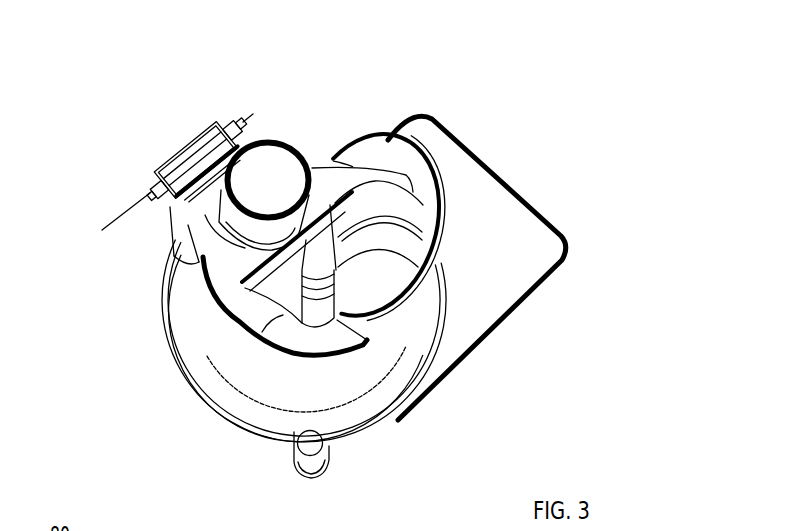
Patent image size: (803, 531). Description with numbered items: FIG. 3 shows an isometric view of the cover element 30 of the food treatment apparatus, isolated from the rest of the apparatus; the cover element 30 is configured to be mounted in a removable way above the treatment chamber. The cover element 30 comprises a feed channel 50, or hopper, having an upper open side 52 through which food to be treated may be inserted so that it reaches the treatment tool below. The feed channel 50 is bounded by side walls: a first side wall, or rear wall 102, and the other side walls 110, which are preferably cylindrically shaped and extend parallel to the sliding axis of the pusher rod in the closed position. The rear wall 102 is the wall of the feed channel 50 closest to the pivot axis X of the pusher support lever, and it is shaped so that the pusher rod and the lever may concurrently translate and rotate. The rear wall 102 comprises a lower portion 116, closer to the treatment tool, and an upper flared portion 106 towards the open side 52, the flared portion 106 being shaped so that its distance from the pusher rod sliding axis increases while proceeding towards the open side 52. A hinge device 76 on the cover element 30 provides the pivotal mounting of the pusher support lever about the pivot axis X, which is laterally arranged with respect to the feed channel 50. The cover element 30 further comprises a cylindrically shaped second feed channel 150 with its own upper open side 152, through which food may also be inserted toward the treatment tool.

The cover element 30 is at (563, 128).
The feed channel 50 is at (484, 269).
The upper open side 52 is at (402, 210).
The hinge device 76 is at (150, 185).
The pivot axis X is at (118, 216).
The rear wall 102 is at (258, 272).
The flared portion 106 is at (268, 252).
The side walls 110 is at (381, 86).
The lower portion 116 is at (258, 349).
The second feed channel 150 is at (233, 213).
The upper open side 152 is at (264, 145).